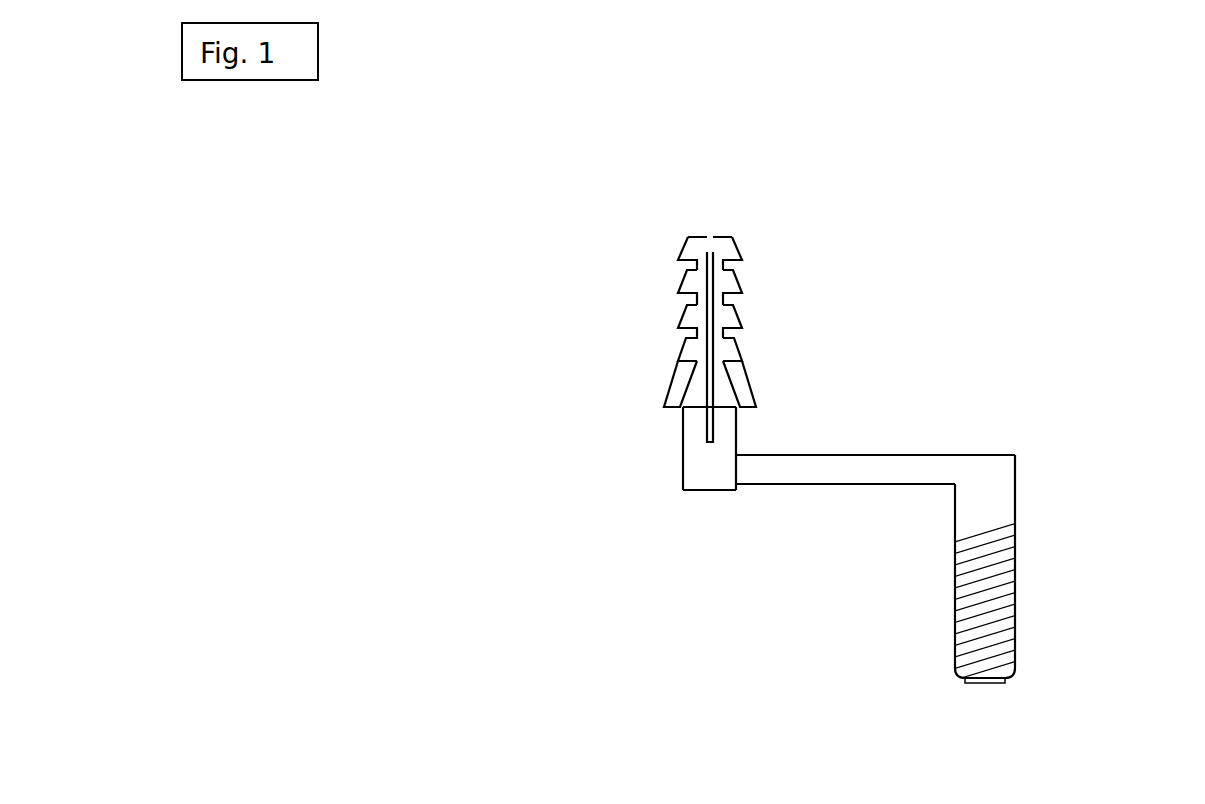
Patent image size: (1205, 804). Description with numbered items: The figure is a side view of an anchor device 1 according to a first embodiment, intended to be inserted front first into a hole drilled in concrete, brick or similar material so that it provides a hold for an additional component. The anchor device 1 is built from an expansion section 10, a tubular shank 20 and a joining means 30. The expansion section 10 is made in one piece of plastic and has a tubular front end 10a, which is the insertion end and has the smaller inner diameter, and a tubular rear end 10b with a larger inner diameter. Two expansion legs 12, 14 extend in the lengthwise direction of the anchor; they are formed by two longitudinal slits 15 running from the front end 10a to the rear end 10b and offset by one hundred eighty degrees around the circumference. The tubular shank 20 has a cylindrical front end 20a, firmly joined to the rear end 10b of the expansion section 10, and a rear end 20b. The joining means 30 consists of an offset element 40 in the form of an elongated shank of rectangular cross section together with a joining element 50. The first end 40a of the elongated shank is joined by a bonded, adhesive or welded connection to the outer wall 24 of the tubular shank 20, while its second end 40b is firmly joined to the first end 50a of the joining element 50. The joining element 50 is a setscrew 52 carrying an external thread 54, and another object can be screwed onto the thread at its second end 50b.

The anchor device 1 is at (1026, 169).
The expansion section 10 is at (760, 206).
The tubular front end 10a is at (688, 238).
The tubular rear end 10b is at (682, 408).
The expansion leg 12 is at (687, 283).
The expansion leg 14 is at (722, 323).
The longitudinal slit 15 is at (709, 250).
The tubular shank 20 is at (700, 457).
The front end 20a is at (728, 415).
The rear end 20b is at (710, 488).
The outer wall 24 is at (685, 442).
The joining means 30 is at (949, 404).
The offset element 40 is at (891, 474).
The first end 40a is at (741, 470).
The second end 40b is at (1007, 477).
The joining element 50 is at (963, 652).
The first end 50a is at (997, 493).
The second end 50b is at (1008, 677).
The setscrew 52 is at (1008, 598).
The external thread 54 is at (962, 613).